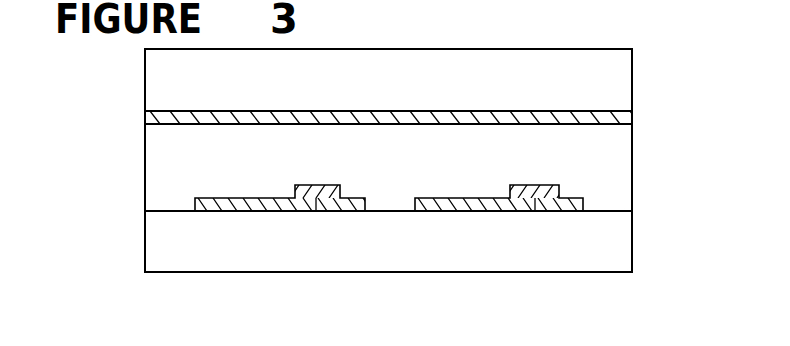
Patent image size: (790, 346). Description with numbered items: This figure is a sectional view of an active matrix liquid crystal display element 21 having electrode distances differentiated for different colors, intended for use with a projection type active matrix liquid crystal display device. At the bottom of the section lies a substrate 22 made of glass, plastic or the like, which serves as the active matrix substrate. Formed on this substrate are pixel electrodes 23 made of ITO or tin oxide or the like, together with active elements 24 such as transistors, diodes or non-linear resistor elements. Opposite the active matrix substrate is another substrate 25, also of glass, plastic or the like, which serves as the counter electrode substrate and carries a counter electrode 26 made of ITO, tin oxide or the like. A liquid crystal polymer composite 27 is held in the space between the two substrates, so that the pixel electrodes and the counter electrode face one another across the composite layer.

The active matrix liquid crystal display element 21 is at (640, 49).
The substrate 22 is at (600, 237).
The pixel electrodes 23 is at (459, 211).
The active elements 24 is at (552, 211).
The another substrate 25 is at (602, 80).
The counter electrode 26 is at (617, 117).
The liquid crystal polymer composite 27 is at (605, 162).